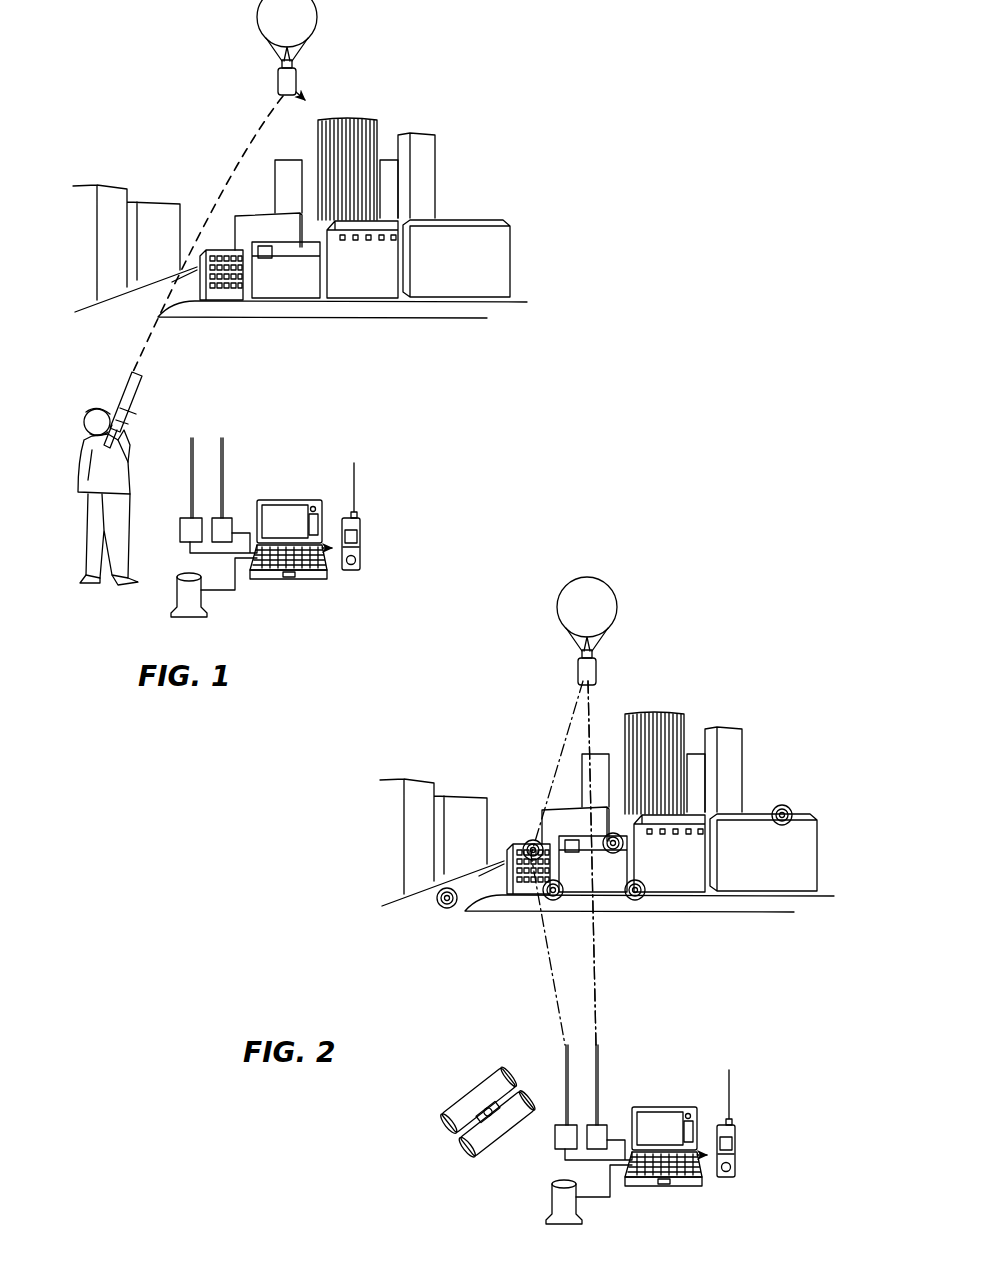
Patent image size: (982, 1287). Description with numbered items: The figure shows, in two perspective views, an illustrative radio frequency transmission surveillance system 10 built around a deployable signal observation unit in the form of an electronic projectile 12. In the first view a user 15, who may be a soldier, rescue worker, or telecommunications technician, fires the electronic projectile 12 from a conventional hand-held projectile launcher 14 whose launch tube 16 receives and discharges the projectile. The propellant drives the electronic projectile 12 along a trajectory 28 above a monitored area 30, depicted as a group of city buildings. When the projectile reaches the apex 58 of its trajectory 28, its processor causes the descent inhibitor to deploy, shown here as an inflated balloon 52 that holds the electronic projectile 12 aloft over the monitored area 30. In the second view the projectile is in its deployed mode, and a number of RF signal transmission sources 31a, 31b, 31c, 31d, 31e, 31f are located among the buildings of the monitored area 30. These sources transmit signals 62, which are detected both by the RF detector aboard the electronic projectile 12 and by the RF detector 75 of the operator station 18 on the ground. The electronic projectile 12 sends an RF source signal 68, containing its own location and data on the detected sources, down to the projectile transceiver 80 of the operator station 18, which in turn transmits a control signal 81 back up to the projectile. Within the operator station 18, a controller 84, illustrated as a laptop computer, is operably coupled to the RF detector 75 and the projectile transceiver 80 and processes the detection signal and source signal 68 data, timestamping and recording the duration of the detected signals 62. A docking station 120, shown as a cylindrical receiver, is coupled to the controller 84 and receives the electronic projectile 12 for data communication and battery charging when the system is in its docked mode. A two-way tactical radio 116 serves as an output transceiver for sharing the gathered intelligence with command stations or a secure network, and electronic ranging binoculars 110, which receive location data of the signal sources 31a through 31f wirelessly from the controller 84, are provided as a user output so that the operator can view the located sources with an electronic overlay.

In FIG. 1, the radio frequency transmission surveillance system 10 is at (478, 74).
In FIG. 2, the radio frequency transmission surveillance system 10 is at (738, 628).
In FIG. 1, the electronic projectile 12 is at (336, 44).
In FIG. 2, the electronic projectile 12 is at (640, 593).
In FIG. 1, the hand-held projectile launcher 14 is at (172, 416).
In FIG. 1, the user 15 is at (83, 484).
In FIG. 1, the launch tube 16 is at (126, 372).
In FIG. 1, the operator station 18 is at (384, 460).
In FIG. 2, the operator station 18 is at (758, 1066).
In FIG. 1, the trajectory 28 is at (237, 145).
In FIG. 1, the monitored area 30 is at (476, 146).
In FIG. 2, the monitored area 30 is at (742, 694).
In FIG. 2, the RF signal transmission source 31a is at (441, 910).
In FIG. 2, the RF signal transmission source 31b is at (533, 840).
In FIG. 2, the RF signal transmission source 31c is at (553, 901).
In FIG. 2, the RF signal transmission source 31d is at (613, 854).
In FIG. 2, the RF signal transmission source 31e is at (642, 899).
In FIG. 2, the RF signal transmission source 31f is at (789, 808).
In FIG. 1, the balloon 52 is at (268, 32).
In FIG. 1, the apex 58 is at (272, 99).
In FIG. 2, the signals 62 is at (572, 722).
In FIG. 2, the RF source signal 68 is at (590, 706).
In FIG. 2, the control signal 81 is at (592, 863).
In FIG. 1, the RF detector 75 is at (168, 527).
In FIG. 2, the RF detector 75 is at (552, 1104).
In FIG. 1, the projectile transceiver 80 is at (252, 476).
In FIG. 2, the projectile transceiver 80 is at (627, 1086).
In FIG. 1, the controller 84 is at (305, 598).
In FIG. 2, the controller 84 is at (680, 1206).
In FIG. 2, the binoculars 110 is at (443, 1132).
In FIG. 1, the tactical radio 116 is at (392, 522).
In FIG. 2, the tactical radio 116 is at (768, 1130).
In FIG. 1, the docking station 120 is at (140, 622).
In FIG. 2, the docking station 120 is at (515, 1230).